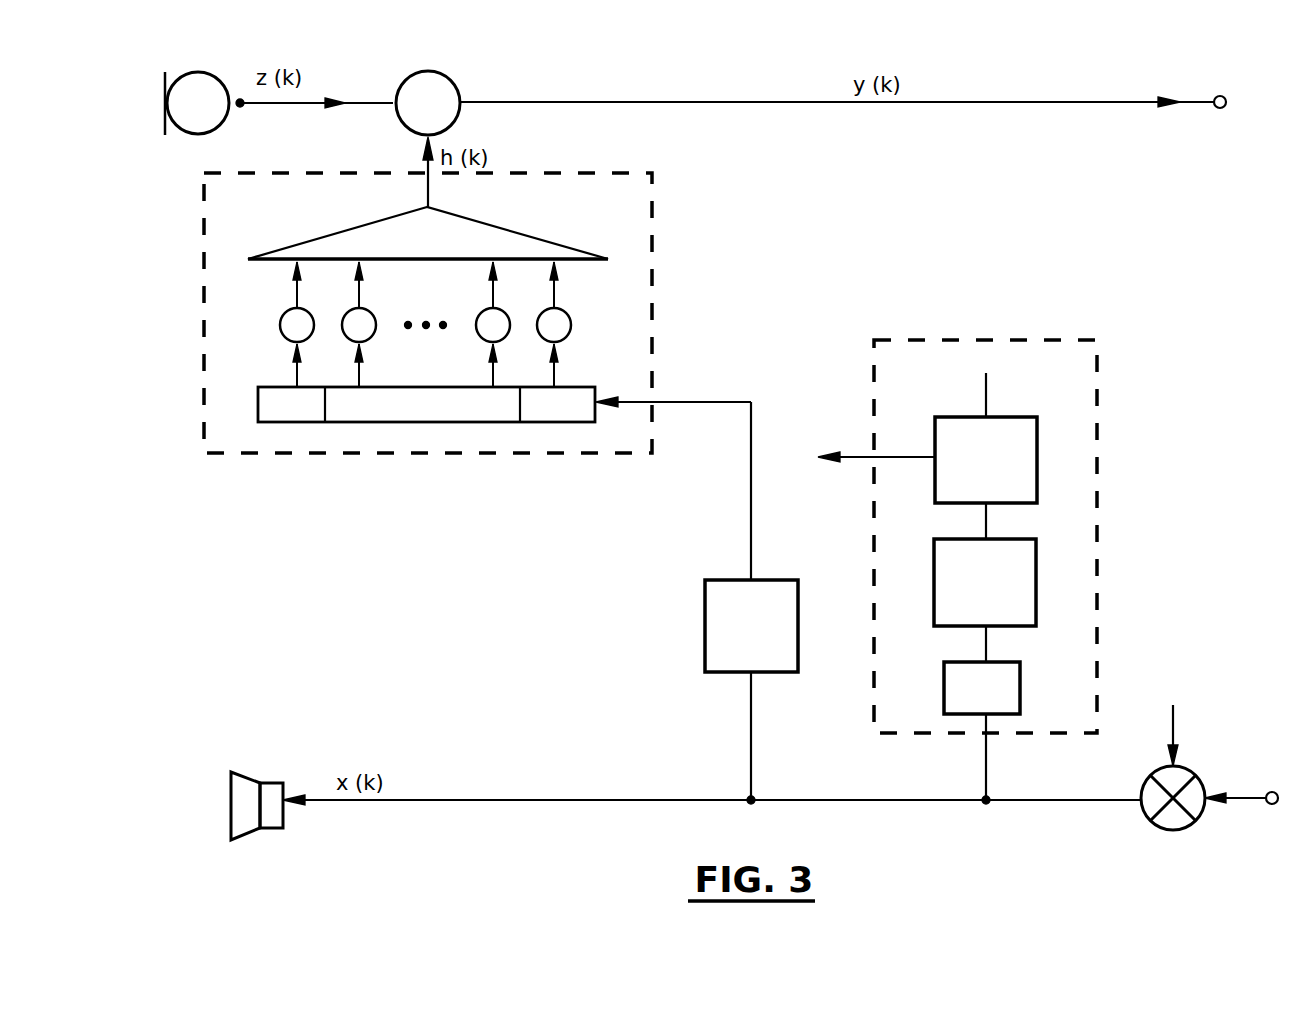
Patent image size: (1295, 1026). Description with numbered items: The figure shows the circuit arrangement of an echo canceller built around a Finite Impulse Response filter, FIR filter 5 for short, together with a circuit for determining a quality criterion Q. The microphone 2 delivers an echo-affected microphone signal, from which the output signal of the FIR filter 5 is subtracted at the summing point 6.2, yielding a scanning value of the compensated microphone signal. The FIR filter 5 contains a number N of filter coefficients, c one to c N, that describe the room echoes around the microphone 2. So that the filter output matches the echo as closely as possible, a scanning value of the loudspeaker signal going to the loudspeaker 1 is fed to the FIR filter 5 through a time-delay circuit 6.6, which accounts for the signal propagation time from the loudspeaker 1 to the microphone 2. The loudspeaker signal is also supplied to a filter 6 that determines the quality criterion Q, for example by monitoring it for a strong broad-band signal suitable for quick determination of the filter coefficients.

The loudspeaker 1 is at (231, 800).
The microphone 2 is at (165, 125).
The FIR filter 5 is at (652, 216).
The filter 6 is at (1097, 448).
The subtractor 6.2 is at (449, 76).
The time-delay circuit 6.6 is at (705, 622).